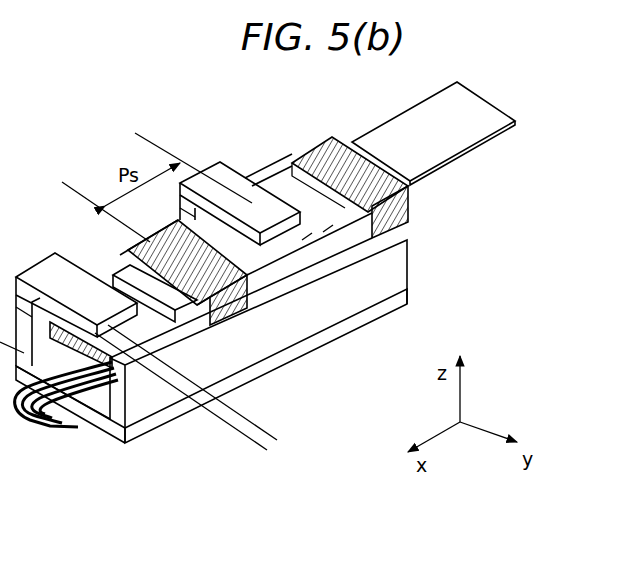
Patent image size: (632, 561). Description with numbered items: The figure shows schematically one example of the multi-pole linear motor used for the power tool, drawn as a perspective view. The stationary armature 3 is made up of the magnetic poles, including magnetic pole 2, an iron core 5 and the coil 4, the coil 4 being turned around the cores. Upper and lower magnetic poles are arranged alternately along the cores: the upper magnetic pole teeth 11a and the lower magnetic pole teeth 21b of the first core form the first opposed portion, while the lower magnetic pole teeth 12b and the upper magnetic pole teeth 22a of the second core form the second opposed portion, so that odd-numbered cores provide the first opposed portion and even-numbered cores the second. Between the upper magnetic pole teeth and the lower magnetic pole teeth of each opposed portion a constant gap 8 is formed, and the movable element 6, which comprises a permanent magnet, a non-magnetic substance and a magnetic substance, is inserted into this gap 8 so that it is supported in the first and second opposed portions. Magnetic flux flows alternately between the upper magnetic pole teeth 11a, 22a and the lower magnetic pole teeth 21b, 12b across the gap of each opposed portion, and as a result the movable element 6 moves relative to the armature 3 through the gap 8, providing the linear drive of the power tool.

The magnetic pole 2 is at (125, 413).
The armature 3 is at (407, 270).
The coil 4 is at (44, 430).
The iron core 5 is at (90, 425).
The movable element 6 is at (462, 152).
The constant gap 8 is at (263, 408).
The upper magnetic pole teeth 11a is at (80, 296).
The lower magnetic pole teeth 12b is at (128, 278).
The lower magnetic pole teeth 21b is at (152, 348).
The upper magnetic pole teeth 22a is at (247, 300).